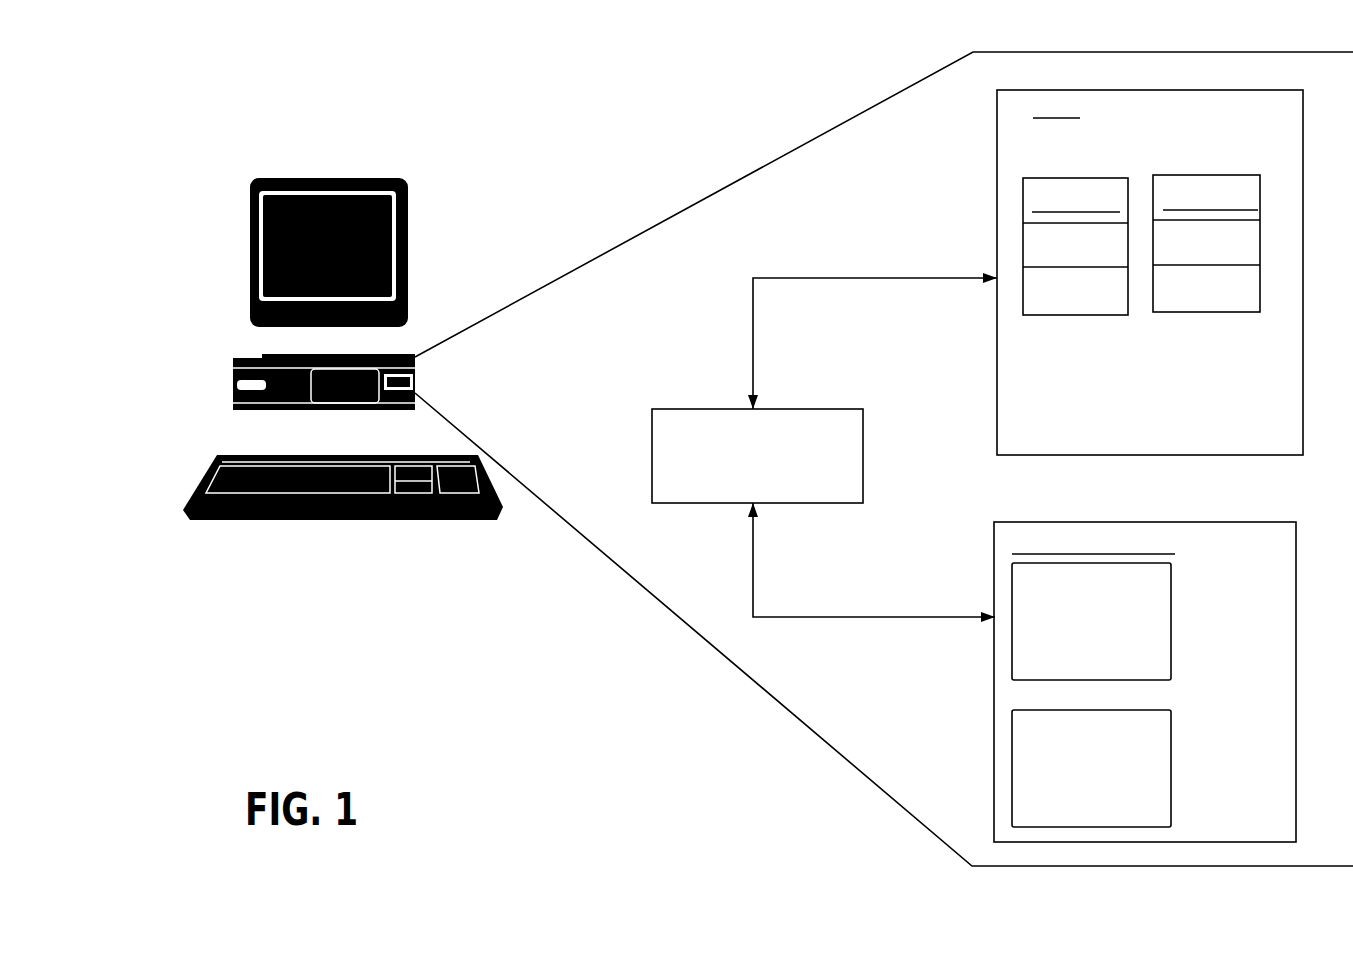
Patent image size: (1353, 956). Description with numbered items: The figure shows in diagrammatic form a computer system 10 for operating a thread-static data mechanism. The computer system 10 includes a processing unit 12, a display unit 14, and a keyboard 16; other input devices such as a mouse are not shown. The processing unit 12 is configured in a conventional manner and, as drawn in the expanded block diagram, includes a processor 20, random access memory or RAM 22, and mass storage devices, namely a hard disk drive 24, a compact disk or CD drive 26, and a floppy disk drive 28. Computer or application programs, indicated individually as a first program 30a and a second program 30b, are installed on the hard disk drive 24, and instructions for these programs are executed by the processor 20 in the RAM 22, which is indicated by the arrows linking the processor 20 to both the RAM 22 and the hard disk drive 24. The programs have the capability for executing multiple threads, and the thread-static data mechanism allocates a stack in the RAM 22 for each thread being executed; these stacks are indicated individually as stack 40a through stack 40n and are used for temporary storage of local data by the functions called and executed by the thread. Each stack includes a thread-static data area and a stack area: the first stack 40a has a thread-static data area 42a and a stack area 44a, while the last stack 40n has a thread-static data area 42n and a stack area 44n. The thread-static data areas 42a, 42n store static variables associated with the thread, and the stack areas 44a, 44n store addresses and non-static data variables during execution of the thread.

The computer system 10 is at (566, 185).
The processing unit 12 is at (355, 371).
The display unit 14 is at (407, 213).
The keyboard 16 is at (250, 518).
The processor 20 is at (757, 456).
The RAM 22 is at (1150, 272).
The hard disk drive 24 is at (1145, 682).
The CD drive 26 is at (415, 357).
The floppy disk drive 28 is at (413, 388).
The computer program 30a is at (1091, 621).
The computer program 30b is at (1091, 768).
The stack 40a is at (1076, 229).
The stack 40n is at (1211, 224).
The thread-static data area 42a is at (1075, 253).
The stack area 44a is at (1075, 291).
The thread-static data area 42n is at (1206, 249).
The stack area 44n is at (1206, 288).